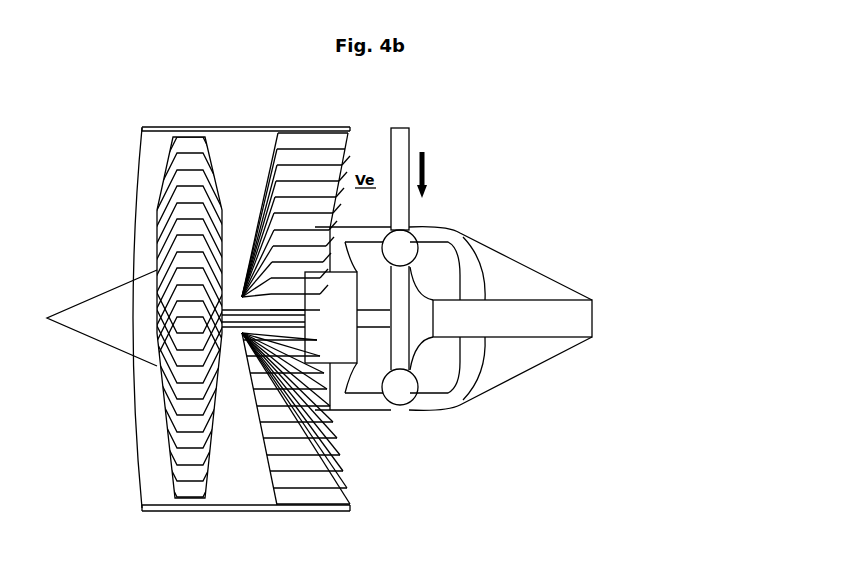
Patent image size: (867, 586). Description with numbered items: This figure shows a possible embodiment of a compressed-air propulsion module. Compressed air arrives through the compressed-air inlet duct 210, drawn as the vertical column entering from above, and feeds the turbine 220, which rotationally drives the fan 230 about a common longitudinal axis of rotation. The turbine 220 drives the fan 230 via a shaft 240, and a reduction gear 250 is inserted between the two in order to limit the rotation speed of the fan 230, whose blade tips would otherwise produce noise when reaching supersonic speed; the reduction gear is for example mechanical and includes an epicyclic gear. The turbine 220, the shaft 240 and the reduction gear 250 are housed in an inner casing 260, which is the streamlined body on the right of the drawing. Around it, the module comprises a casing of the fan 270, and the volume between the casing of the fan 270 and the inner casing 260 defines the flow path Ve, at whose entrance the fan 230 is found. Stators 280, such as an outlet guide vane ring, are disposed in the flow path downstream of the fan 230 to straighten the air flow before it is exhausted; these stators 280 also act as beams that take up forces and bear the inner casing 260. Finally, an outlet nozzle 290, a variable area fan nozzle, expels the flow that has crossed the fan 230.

The compressed-air inlet duct 210 is at (415, 224).
The turbine 220 is at (476, 195).
The fan 230 is at (145, 192).
The shaft 240 is at (373, 318).
The reduction gear 250 is at (293, 311).
The inner casing 260 is at (433, 402).
The casing of the fan 270 is at (187, 127).
The stators 280 is at (249, 155).
The outlet nozzle 290 is at (342, 512).